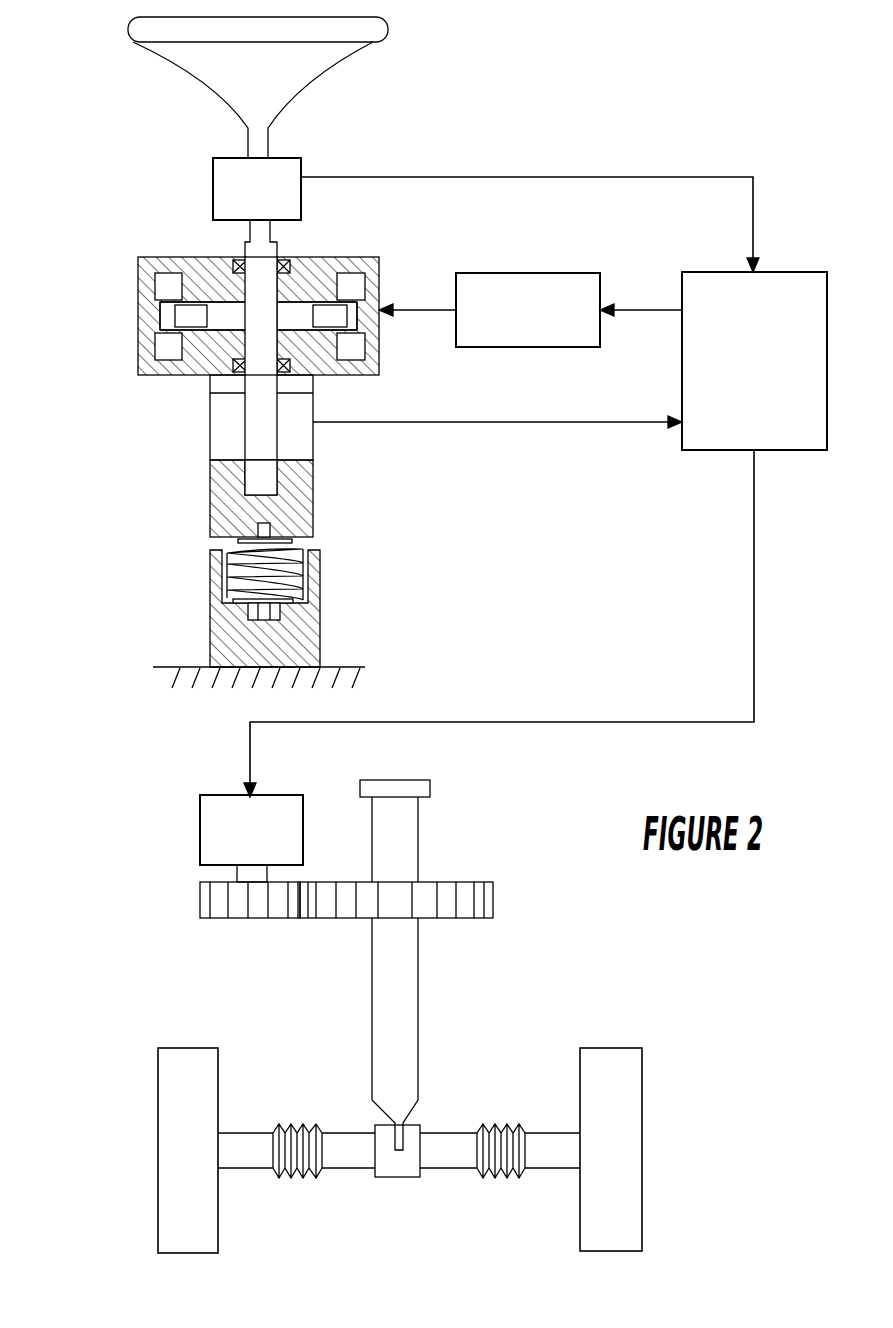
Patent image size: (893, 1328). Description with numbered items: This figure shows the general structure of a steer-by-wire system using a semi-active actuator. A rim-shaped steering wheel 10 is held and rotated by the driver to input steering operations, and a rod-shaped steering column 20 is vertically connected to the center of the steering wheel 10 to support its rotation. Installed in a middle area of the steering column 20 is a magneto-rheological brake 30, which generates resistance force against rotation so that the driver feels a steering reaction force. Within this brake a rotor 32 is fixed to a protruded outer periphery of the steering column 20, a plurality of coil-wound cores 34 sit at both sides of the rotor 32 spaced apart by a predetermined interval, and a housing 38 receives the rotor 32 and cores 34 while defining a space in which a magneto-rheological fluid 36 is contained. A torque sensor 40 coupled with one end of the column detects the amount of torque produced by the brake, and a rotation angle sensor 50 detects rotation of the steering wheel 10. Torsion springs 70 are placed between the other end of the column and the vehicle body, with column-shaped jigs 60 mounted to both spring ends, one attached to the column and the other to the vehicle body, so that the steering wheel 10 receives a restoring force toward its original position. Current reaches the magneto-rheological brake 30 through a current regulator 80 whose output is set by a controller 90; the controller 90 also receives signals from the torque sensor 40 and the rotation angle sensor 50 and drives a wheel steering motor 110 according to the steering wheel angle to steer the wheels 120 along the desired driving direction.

The steering wheel 10 is at (375, 28).
The steering column 20 is at (262, 143).
The magneto-rheological brake 30 is at (206, 341).
The rotor 32 is at (175, 318).
The cores 34 is at (163, 350).
The magneto-rheological fluid 36 is at (140, 305).
The housing 38 is at (153, 257).
The torque sensor 40 is at (213, 190).
The rotation angle sensor 50 is at (222, 428).
The jigs 60 is at (213, 575).
The torsion springs 70 is at (230, 585).
The current regulator 80 is at (513, 272).
The controller 90 is at (795, 272).
The wheel steering motor 110 is at (205, 850).
The wheels 120 is at (630, 1138).